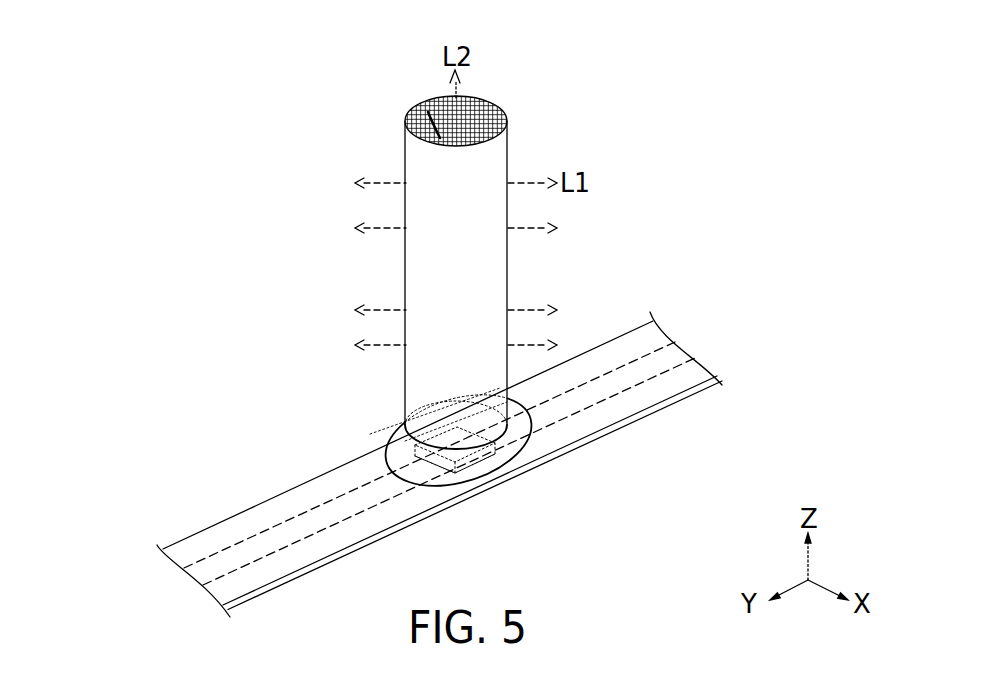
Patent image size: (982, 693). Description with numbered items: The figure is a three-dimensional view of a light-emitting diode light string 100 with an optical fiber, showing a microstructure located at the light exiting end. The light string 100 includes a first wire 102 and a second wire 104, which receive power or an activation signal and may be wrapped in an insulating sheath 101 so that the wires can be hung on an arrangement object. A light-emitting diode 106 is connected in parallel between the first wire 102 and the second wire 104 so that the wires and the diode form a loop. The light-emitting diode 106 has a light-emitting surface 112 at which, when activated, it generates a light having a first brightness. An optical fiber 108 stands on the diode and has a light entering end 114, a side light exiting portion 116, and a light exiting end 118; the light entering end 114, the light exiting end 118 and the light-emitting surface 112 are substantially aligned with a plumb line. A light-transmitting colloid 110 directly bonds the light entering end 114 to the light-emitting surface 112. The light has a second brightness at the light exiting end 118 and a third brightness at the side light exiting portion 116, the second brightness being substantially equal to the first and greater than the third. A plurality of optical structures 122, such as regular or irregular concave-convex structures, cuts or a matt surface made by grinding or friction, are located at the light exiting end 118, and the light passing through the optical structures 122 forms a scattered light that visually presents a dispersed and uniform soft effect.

The light-emitting diode light string with an optical fiber 100 is at (88, 140).
The insulating sheath 101 is at (665, 401).
The first wire 102 is at (253, 537).
The second wire 104 is at (273, 556).
The light-emitting diode 106 is at (472, 465).
The optical fiber 108 is at (406, 276).
The light-transmitting colloid 110 is at (388, 439).
The light-emitting surface 112 is at (431, 440).
The light entering end 114 is at (496, 472).
The side light exiting portion 116 is at (507, 282).
The light exiting end 118 is at (405, 109).
The optical structures 122 is at (492, 103).